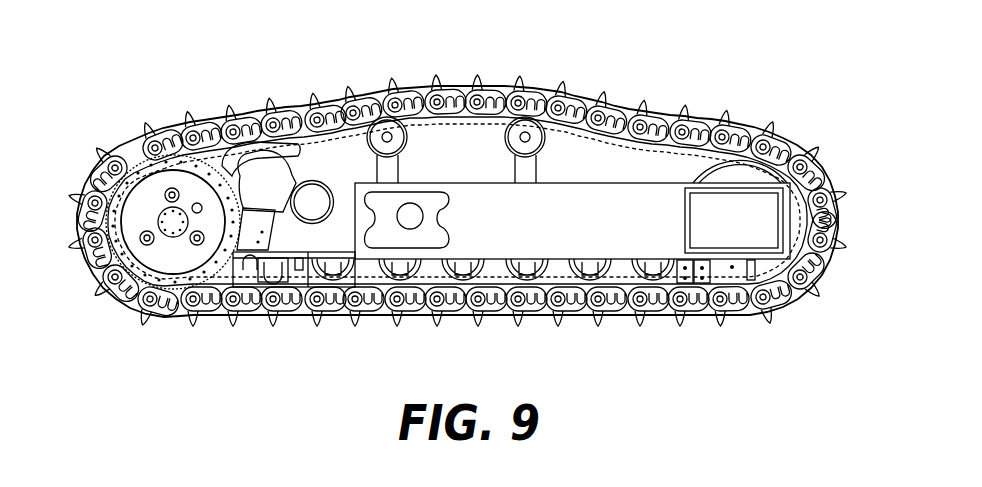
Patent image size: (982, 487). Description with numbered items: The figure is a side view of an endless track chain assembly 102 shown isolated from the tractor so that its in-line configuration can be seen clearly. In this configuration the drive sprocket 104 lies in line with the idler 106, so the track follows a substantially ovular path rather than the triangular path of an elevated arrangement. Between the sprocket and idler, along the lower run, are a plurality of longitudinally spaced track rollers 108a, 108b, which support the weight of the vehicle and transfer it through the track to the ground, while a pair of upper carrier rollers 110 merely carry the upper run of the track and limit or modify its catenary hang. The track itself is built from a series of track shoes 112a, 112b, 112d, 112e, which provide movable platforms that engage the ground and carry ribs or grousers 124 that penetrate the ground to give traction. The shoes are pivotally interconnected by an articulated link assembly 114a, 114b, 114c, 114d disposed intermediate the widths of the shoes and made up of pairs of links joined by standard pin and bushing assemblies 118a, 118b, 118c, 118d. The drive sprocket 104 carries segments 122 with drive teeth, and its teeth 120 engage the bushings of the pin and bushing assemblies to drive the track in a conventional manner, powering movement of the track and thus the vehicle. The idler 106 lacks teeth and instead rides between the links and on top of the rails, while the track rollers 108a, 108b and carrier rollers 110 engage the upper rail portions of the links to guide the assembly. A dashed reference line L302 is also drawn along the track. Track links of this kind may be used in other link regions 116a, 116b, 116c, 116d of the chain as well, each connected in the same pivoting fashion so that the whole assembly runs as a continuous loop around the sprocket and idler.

The track chain assembly 102 is at (472, 206).
The drive sprocket 104 is at (137, 290).
The idler 106 is at (787, 300).
The track roller 108a is at (640, 267).
The track roller 108b is at (588, 268).
The carrier roller 110 is at (503, 137).
The track shoe 112a is at (237, 318).
The track shoe 112b is at (458, 318).
The track shoe 112d is at (417, 85).
The track shoe 112e is at (540, 87).
The link assembly 114a is at (327, 320).
The link assembly 114b is at (520, 317).
The link assembly 114c is at (257, 117).
The link assembly 114d is at (622, 100).
The track link 116a is at (277, 322).
The track link 116b is at (660, 310).
The track link 116c is at (207, 157).
The track link 116d is at (492, 93).
The pin and bushing assembly 118a is at (362, 317).
The pin and bushing assembly 118b is at (558, 312).
The pin and bushing assembly 118c is at (320, 118).
The pin and bushing assembly 118d is at (597, 93).
The teeth 120 is at (250, 160).
The segments 122 is at (170, 127).
The grousers 124 is at (840, 240).
The track centerline L302 is at (705, 120).